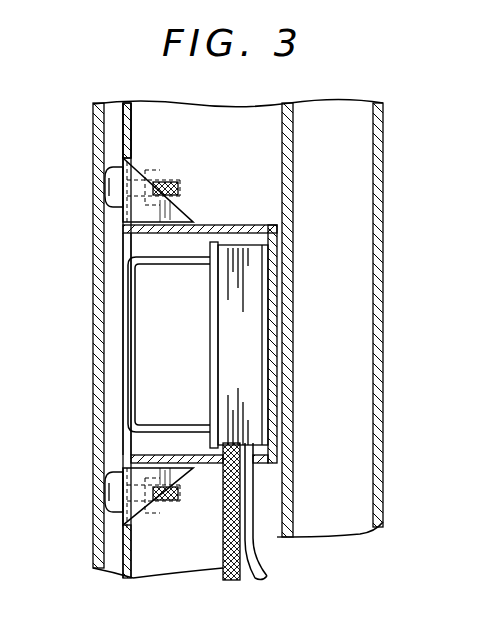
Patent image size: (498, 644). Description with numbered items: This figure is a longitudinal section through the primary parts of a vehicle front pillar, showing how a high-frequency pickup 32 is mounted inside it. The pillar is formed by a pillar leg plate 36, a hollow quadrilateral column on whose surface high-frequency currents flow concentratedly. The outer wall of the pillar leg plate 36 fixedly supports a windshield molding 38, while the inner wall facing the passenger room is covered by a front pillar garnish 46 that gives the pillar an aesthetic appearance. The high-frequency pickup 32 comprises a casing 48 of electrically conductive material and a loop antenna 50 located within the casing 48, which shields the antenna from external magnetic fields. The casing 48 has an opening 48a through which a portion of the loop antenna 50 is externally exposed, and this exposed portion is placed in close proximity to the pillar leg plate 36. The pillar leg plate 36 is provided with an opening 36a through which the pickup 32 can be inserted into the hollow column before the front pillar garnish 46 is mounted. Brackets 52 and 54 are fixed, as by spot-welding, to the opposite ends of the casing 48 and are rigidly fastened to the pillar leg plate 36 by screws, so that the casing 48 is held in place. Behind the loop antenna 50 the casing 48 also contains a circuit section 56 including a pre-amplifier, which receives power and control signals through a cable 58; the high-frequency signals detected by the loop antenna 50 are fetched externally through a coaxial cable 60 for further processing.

The high-frequency pickup 32 is at (284, 283).
The pillar leg plate 36 is at (133, 578).
The opening 36a is at (123, 144).
The windshield molding 38 is at (380, 447).
The front pillar garnish 46 is at (93, 355).
The casing 48 is at (248, 225).
The opening 48a is at (123, 233).
The loop antenna 50 is at (135, 309).
The bracket 52 is at (175, 218).
The bracket 54 is at (175, 483).
The circuit section 56 is at (250, 333).
The cable 58 is at (254, 560).
The coaxial cable 60 is at (222, 572).